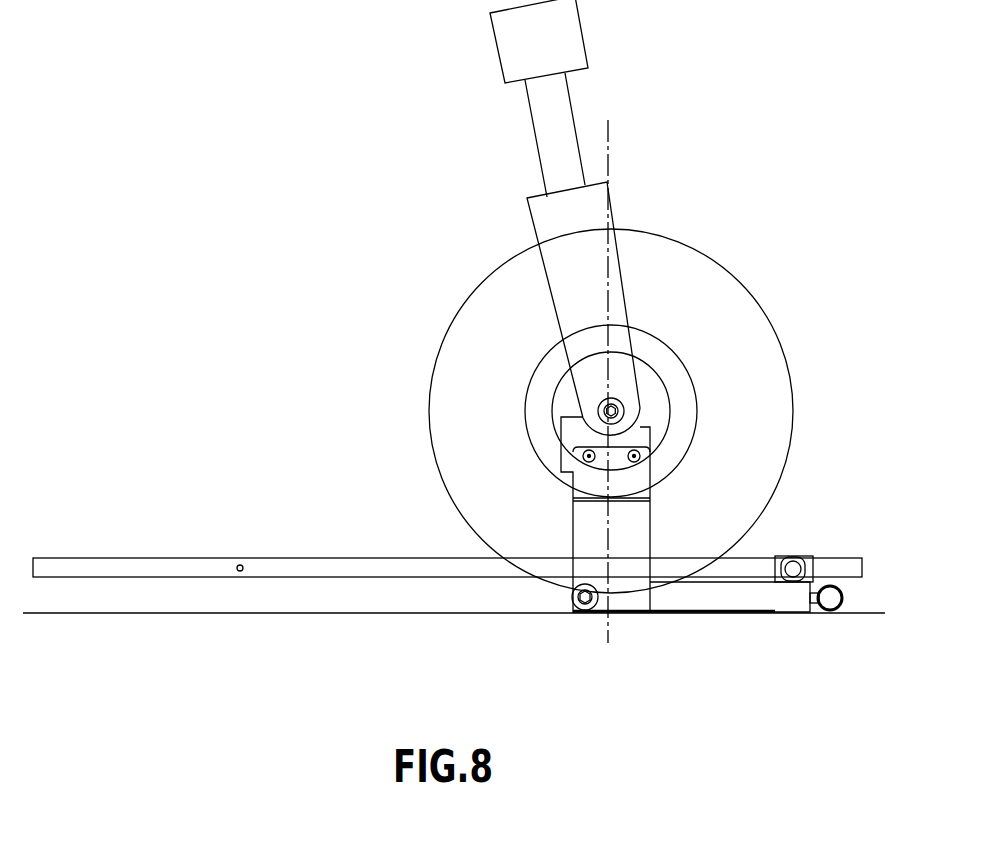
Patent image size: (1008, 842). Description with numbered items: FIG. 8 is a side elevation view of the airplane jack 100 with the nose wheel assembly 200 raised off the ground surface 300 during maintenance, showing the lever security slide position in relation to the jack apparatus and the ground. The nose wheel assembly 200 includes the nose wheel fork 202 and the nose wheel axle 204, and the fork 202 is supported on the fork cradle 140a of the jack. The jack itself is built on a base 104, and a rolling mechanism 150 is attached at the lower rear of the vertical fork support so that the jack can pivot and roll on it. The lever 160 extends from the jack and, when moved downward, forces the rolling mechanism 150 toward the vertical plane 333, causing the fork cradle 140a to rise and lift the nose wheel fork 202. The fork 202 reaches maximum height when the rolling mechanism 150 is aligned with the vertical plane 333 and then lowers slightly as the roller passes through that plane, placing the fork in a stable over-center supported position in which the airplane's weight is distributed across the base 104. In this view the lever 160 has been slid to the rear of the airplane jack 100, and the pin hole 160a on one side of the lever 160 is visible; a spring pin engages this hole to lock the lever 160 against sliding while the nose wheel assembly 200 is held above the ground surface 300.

The airplane jack 100 is at (813, 496).
The base 104 is at (730, 652).
The fork cradle 140a is at (572, 440).
The rolling mechanism 150 is at (573, 613).
The lever 160 is at (81, 570).
The pin hole 160a is at (239, 560).
The nose wheel assembly 200 is at (370, 297).
The nose wheel fork 202 is at (567, 227).
The nose wheel axle 204 is at (616, 408).
The ground surface 300 is at (128, 615).
The vertical plane 333 is at (608, 143).